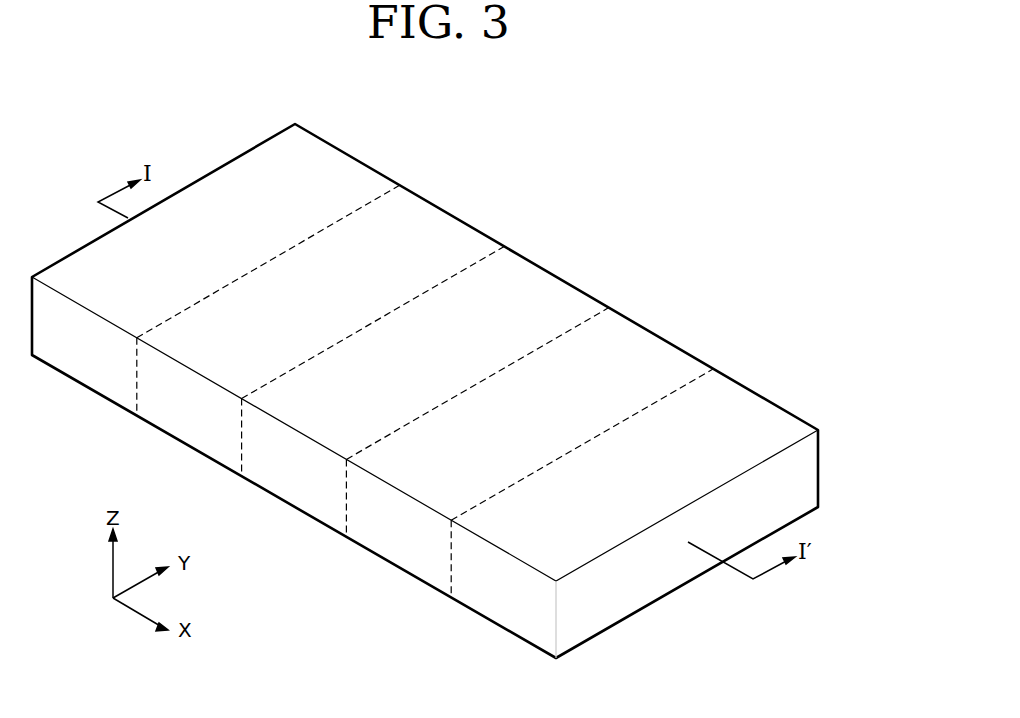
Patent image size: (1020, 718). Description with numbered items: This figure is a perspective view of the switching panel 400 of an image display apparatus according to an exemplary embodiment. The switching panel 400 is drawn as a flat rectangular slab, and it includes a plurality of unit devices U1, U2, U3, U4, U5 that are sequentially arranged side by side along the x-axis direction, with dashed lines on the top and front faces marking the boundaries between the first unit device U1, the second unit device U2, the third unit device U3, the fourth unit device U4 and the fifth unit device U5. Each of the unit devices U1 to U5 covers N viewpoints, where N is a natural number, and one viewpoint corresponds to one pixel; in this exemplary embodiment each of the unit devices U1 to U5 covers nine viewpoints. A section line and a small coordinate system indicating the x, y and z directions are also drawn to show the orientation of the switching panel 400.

The switching panel 400 is at (425, 391).
The unit device U1 is at (268, 300).
The unit device U2 is at (373, 361).
The unit device U3 is at (477, 422).
The unit device U4 is at (582, 483).
The unit device U5 is at (634, 475).